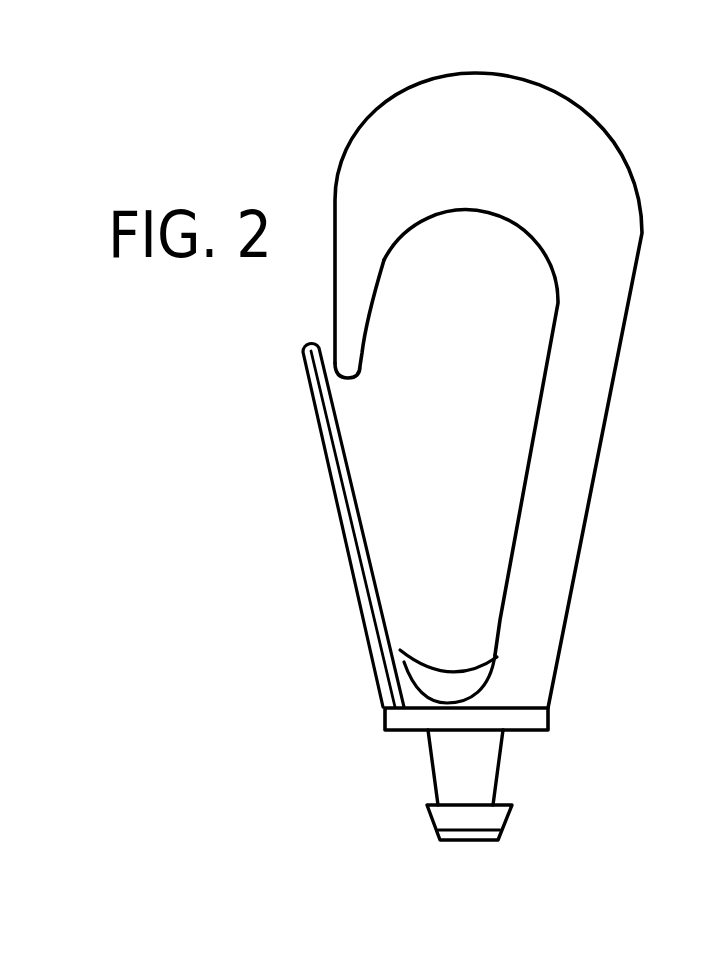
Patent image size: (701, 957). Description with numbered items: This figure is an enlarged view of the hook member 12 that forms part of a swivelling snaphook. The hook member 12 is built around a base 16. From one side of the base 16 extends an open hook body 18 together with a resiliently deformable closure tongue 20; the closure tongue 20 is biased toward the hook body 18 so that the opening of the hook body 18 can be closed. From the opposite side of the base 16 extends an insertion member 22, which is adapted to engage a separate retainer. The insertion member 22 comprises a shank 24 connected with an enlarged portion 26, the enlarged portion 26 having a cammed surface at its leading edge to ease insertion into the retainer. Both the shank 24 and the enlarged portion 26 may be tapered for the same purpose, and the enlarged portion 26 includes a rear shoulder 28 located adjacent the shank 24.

The hook member 12 is at (628, 408).
The base 16 is at (387, 715).
The hook body 18 is at (525, 117).
The closure tongue 20 is at (345, 503).
The insertion member 22 is at (462, 815).
The shank 24 is at (457, 763).
The enlarged portion 26 is at (452, 845).
The rear shoulder 28 is at (437, 802).